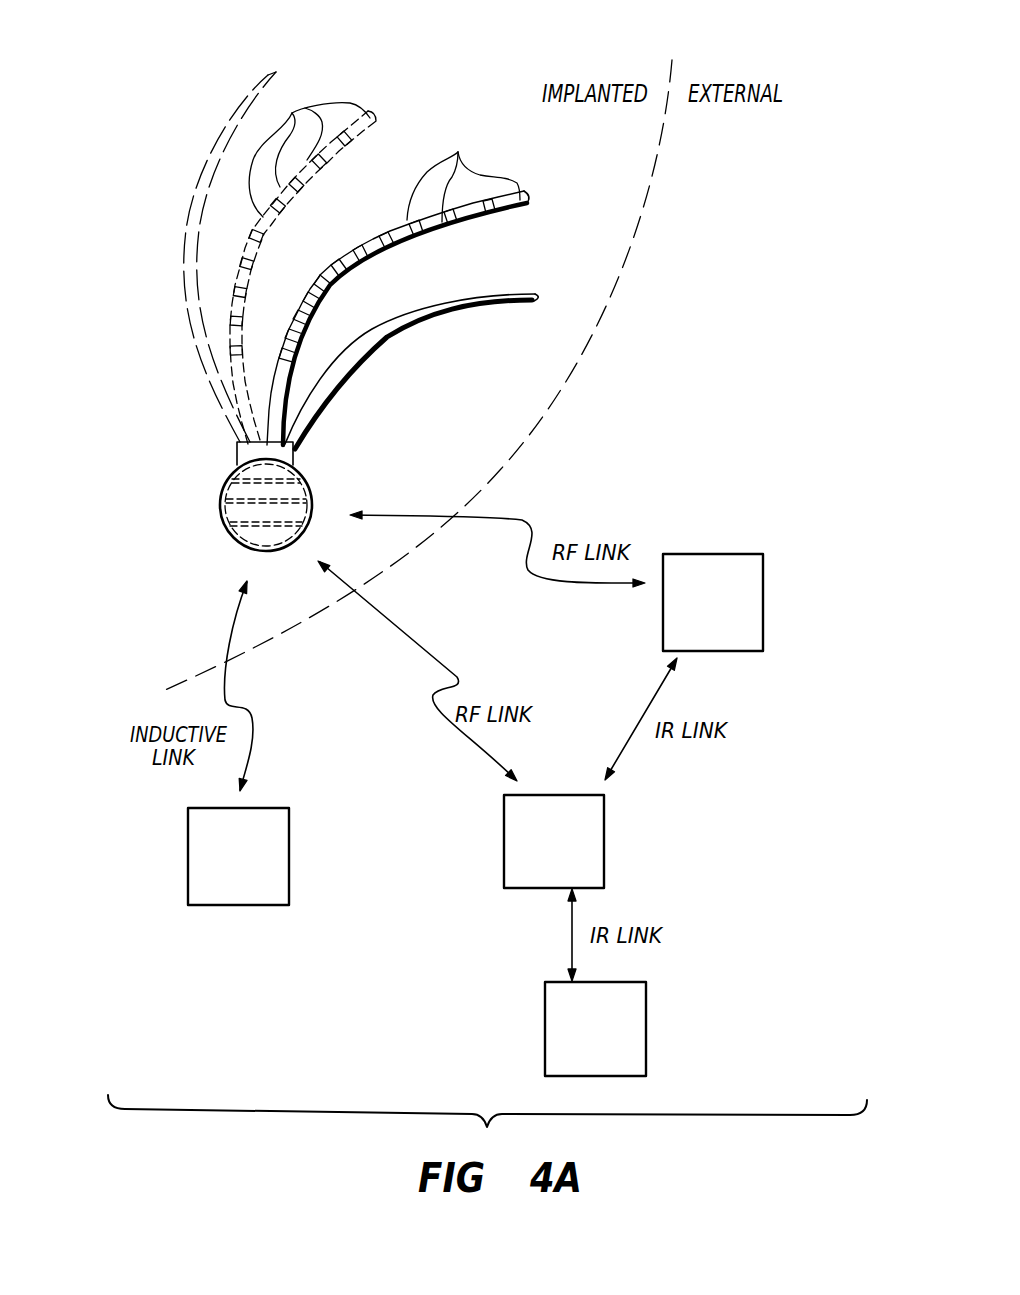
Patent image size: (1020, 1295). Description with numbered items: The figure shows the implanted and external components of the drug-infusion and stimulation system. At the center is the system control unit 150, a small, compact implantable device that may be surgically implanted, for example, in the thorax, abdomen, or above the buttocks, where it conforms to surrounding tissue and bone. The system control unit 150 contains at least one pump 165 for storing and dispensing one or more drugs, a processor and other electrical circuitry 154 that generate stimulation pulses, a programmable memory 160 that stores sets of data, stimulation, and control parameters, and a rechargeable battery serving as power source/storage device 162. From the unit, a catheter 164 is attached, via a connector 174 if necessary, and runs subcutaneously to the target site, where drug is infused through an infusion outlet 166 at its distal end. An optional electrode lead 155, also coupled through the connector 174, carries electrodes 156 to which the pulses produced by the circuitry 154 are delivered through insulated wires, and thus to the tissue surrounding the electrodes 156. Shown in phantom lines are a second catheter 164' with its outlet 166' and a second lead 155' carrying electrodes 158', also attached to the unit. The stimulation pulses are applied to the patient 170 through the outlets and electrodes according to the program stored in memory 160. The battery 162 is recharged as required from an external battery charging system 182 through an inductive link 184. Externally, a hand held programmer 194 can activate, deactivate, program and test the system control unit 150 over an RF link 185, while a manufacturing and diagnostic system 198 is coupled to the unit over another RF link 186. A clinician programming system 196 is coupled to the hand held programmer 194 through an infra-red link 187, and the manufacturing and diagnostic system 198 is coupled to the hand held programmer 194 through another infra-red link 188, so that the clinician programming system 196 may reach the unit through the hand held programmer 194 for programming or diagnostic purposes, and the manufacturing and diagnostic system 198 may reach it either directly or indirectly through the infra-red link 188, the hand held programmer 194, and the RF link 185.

The system control unit 150 is at (311, 486).
The electrical components 154 is at (247, 470).
The electrode lead 155 is at (398, 318).
The second lead 155' is at (303, 277).
The electrodes 156 is at (458, 152).
The second positioner / flap 158' is at (309, 150).
The programmable memory 160 is at (240, 489).
The power source/storage device 162 is at (250, 541).
The catheter 164 is at (410, 371).
The second catheter 164' is at (169, 257).
The pump 165 is at (250, 515).
The infusion outlet 166 is at (567, 278).
The outlet 166' is at (266, 40).
The patient 170 is at (524, 412).
The connector 174 is at (237, 454).
The external battery charging system 182 is at (188, 853).
The inductive link 184 is at (252, 740).
The RF link 185 is at (457, 677).
The RF link 186 is at (530, 520).
The infra-red link 187 is at (572, 930).
The infra-red link 188 is at (637, 727).
The hand held programmer 194 is at (604, 840).
The clinician programming system 196 is at (646, 1020).
The manufacturing and diagnostic system 198 is at (713, 554).